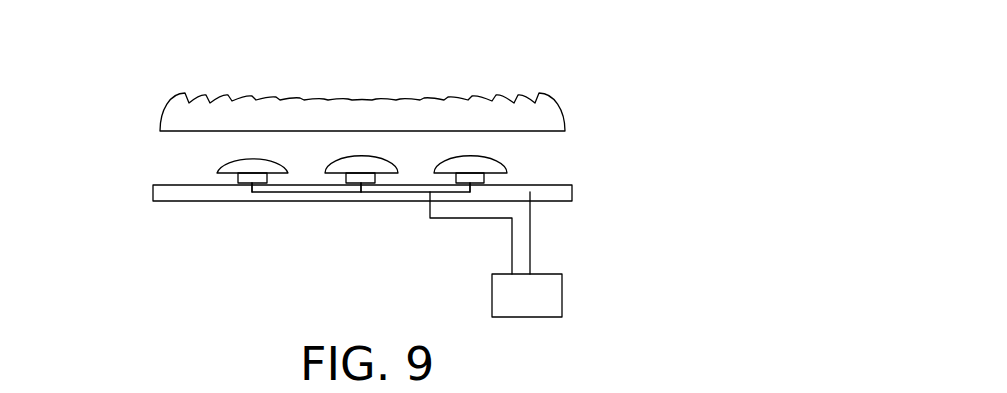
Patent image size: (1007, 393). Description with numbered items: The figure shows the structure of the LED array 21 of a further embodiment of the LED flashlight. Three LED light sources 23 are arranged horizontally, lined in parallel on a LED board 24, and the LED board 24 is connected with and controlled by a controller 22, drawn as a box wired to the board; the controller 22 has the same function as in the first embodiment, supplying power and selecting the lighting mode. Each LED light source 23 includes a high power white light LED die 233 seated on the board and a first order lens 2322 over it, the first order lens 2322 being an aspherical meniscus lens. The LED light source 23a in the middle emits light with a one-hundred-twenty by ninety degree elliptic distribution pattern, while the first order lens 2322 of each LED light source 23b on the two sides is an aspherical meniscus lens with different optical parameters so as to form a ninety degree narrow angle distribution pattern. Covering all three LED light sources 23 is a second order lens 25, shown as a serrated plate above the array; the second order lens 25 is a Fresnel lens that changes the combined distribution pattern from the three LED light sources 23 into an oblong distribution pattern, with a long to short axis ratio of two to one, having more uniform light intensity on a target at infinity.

The LED array 21 is at (146, 193).
The controller 22 is at (547, 302).
The LED light source 23 is at (274, 92).
The LED light source in the middle 23a is at (361, 93).
The LED light source on two sides 23b is at (342, 91).
The LED board 24 is at (562, 195).
The second order lens 25 is at (547, 120).
The LED die 233 is at (246, 185).
The first order lens 2322 is at (238, 177).